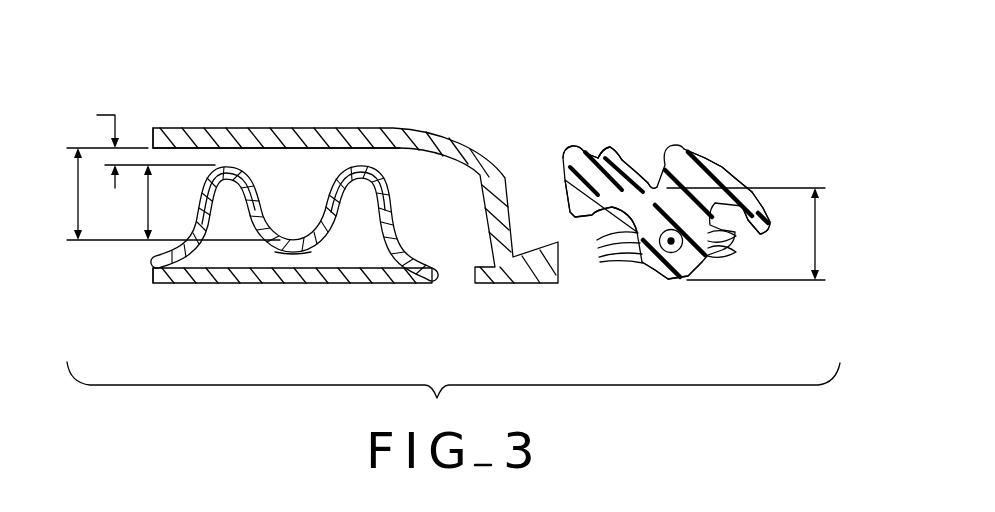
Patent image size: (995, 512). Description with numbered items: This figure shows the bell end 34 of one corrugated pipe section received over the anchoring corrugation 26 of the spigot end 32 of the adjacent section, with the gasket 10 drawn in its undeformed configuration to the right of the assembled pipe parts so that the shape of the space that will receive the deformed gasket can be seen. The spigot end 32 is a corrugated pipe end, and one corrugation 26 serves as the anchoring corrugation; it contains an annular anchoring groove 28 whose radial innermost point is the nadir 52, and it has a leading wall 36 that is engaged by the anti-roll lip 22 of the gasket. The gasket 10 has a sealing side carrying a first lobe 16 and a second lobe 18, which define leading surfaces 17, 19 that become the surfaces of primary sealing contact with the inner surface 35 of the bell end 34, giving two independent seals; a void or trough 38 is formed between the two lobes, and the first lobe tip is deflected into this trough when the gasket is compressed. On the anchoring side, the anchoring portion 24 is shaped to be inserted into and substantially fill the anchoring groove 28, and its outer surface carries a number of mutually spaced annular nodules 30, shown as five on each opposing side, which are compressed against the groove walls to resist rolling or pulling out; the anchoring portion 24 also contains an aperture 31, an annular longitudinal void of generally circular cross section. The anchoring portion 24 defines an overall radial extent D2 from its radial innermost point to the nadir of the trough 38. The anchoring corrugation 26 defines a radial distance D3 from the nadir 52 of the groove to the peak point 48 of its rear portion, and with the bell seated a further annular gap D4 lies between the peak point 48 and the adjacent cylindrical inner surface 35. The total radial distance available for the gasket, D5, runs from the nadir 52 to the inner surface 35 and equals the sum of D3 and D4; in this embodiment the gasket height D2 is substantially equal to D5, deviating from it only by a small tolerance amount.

The gasket 10 is at (667, 190).
The first lobe 16 is at (690, 150).
The leading surface 17 is at (722, 170).
The second lobe 18 is at (578, 143).
The leading surface 19 is at (609, 150).
The anti-roll lip 22 is at (772, 224).
The anchoring portion 24 is at (660, 276).
The anchoring corrugation 26 is at (250, 296).
The anchoring groove 28 is at (312, 201).
The nodules 30 is at (662, 248).
The aperture 31 is at (667, 244).
The spigot end 32 is at (118, 284).
The bell end 34 is at (365, 100).
The inner surface 35 is at (296, 154).
The leading wall 36 is at (392, 215).
The trough 38 is at (646, 152).
The peak point 48 is at (263, 196).
The nadir 52 is at (295, 240).
The distance D2 is at (746, 234).
The distance D3 is at (145, 202).
The distance D4 is at (136, 143).
The distance D5 is at (170, 194).